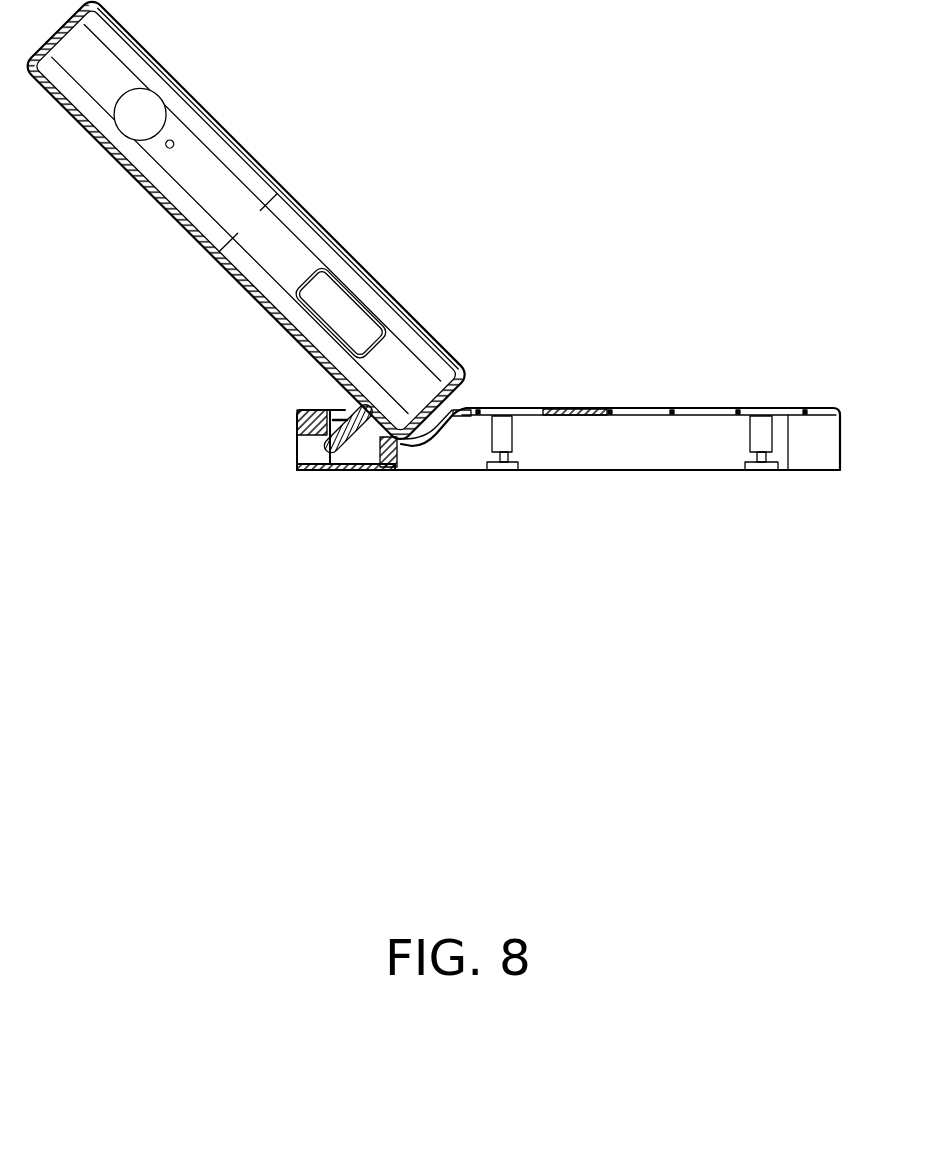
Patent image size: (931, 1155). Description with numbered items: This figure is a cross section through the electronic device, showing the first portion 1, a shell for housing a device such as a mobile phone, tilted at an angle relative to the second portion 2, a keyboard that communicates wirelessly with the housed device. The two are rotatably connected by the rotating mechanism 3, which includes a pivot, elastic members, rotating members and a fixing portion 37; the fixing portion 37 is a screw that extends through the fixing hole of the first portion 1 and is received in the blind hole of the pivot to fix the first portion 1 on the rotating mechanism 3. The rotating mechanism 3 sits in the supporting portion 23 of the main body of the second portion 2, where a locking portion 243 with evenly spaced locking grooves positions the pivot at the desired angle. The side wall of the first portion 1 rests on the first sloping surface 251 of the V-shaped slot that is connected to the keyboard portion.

The first portion 1 is at (218, 152).
The second portion 2 is at (658, 443).
The rotating mechanism 3 is at (322, 467).
The supporting portion 23 is at (298, 424).
The fixing portion 37 is at (372, 470).
The locking portion 243 is at (338, 412).
The first sloping surface 251 is at (437, 435).